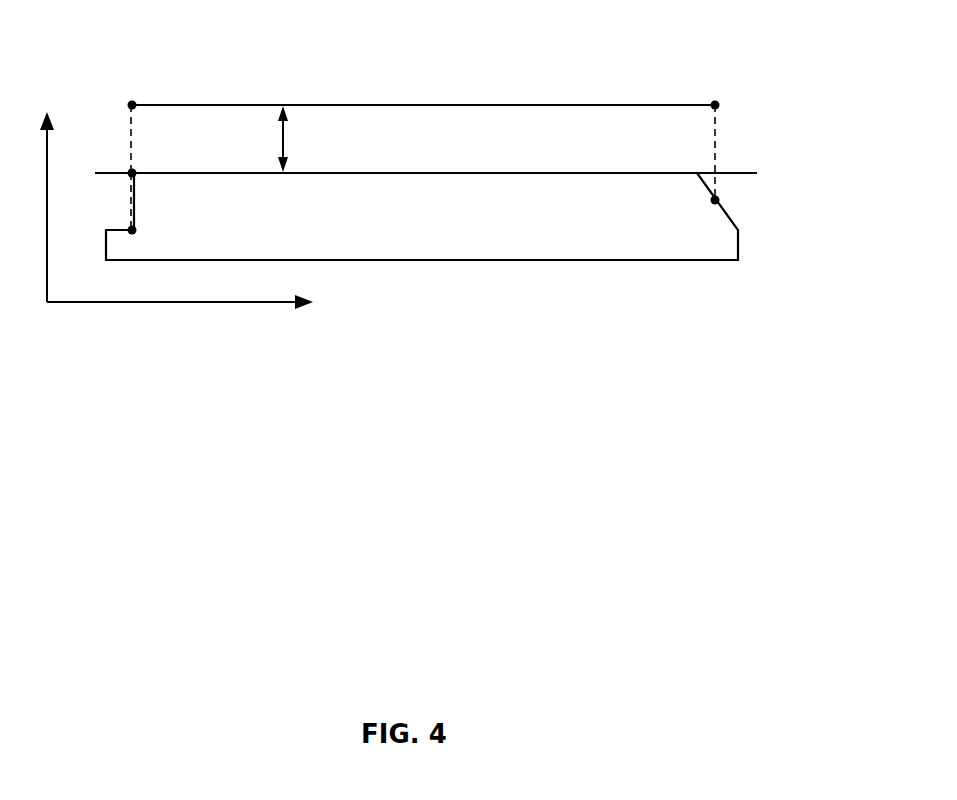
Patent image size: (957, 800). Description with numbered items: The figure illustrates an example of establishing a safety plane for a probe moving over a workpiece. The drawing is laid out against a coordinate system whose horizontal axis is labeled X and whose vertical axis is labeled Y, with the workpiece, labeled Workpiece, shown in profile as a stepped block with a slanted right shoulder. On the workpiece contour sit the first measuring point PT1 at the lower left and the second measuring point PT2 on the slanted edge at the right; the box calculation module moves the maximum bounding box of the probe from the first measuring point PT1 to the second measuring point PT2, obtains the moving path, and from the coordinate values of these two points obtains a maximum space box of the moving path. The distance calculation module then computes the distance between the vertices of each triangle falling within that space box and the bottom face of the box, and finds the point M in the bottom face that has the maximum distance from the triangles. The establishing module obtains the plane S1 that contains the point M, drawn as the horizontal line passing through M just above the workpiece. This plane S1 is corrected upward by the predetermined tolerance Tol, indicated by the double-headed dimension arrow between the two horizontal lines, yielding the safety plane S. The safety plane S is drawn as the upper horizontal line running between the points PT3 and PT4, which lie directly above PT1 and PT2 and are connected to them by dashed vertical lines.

The safety plane S is at (492, 105).
The plane containing the point S1 is at (737, 172).
The first measuring point PT1 is at (103, 204).
The second measuring point PT2 is at (755, 202).
The third point PT3 is at (135, 114).
The fourth point PT4 is at (715, 128).
The point having a maximum distance from the triangles M is at (117, 157).
The predetermined tolerance Tol is at (300, 139).
The X axis X is at (195, 303).
The Y axis Y is at (47, 187).
The workpiece Workpiece is at (647, 243).